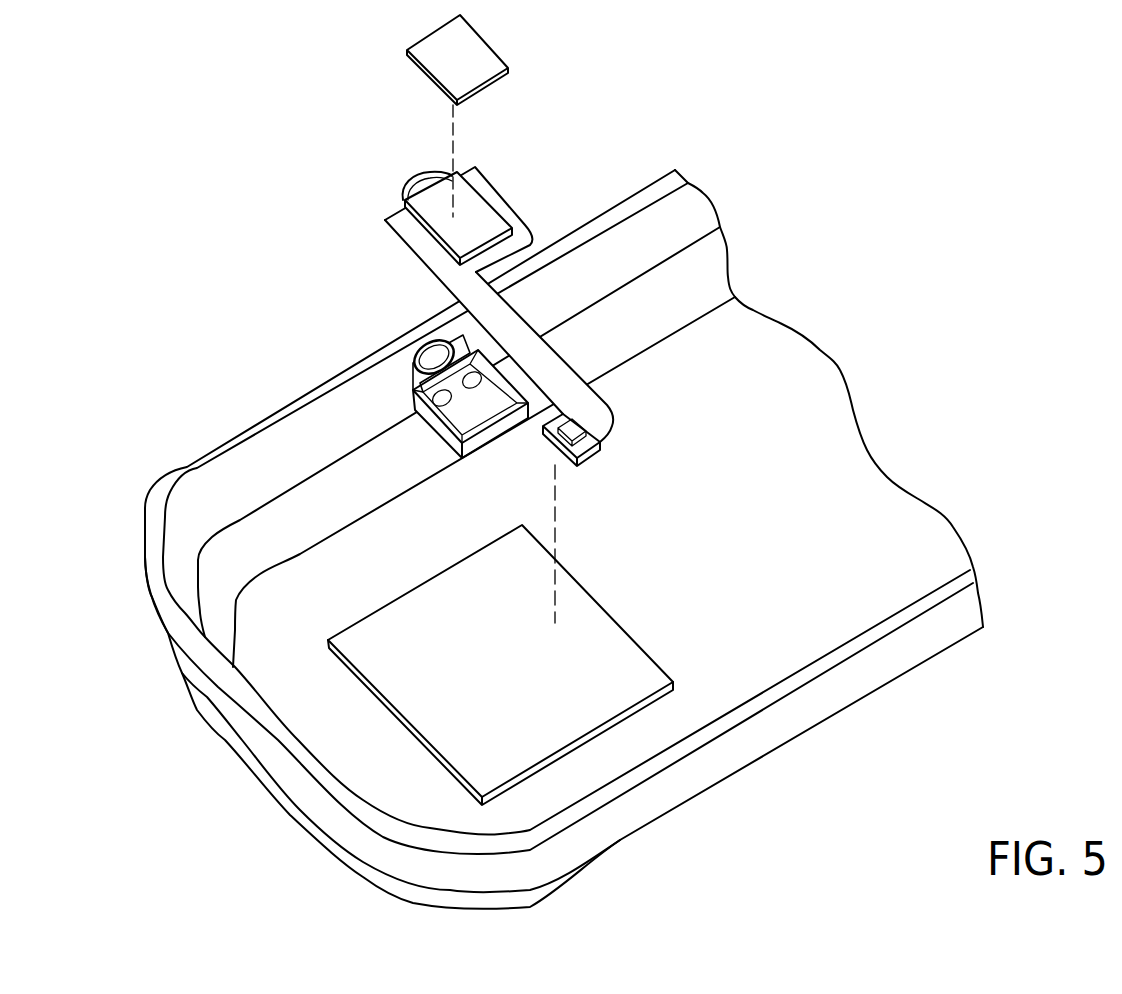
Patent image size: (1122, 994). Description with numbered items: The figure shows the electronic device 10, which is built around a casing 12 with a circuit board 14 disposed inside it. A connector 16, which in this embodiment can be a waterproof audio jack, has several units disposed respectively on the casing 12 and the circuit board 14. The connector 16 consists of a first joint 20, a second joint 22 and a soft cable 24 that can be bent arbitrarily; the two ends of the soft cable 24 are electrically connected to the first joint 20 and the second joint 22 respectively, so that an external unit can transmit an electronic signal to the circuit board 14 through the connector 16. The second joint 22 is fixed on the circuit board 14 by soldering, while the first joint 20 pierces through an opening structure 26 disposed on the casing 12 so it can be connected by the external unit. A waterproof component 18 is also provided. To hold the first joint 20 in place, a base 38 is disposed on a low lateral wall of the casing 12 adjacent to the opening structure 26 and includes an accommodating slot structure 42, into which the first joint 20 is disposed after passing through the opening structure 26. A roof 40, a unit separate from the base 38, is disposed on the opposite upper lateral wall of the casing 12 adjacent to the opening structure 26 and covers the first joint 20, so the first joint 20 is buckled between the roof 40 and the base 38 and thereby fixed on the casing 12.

The electronic device 10 is at (895, 82).
The casing 12 is at (207, 497).
The circuit board 14 is at (583, 638).
The connector 16 is at (510, 133).
The waterproof component 18 is at (412, 184).
The first joint 20 is at (480, 212).
The second joint 22 is at (577, 427).
The soft cable 24 is at (515, 323).
The opening structure 26 is at (428, 343).
The base 38 is at (470, 412).
The roof 40 is at (430, 57).
The accommodating slot structure 42 is at (488, 406).